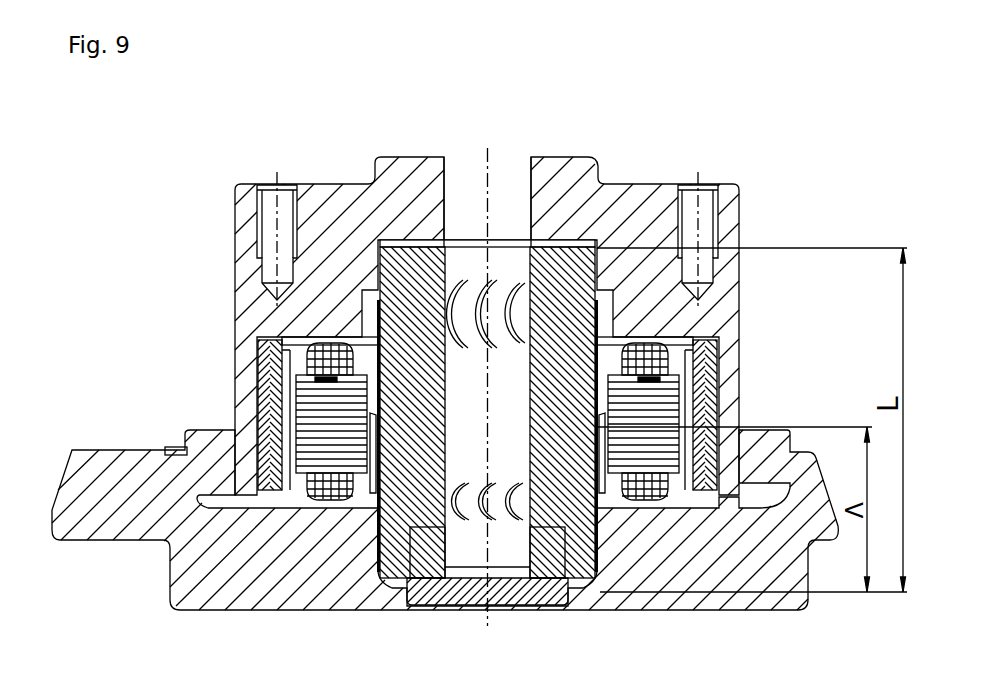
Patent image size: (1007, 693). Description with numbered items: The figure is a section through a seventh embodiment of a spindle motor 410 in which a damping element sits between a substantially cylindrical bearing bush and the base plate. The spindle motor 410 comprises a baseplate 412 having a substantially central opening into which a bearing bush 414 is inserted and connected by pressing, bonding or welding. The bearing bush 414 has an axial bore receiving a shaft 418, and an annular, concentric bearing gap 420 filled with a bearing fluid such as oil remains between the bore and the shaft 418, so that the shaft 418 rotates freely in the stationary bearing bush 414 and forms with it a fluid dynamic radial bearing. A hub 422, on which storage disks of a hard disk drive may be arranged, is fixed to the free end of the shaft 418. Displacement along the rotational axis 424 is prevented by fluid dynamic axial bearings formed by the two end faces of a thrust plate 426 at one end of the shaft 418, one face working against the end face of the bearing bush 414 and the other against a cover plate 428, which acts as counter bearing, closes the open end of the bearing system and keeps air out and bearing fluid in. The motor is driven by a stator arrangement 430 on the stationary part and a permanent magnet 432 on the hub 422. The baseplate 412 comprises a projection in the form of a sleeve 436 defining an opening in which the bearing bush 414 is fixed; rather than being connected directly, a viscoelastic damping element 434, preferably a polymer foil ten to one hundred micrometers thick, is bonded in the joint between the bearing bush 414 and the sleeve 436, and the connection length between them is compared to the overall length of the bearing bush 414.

The spindle motor 410 is at (445, 383).
The baseplate 412 is at (112, 517).
The bearing bush 414 is at (386, 243).
The shaft 418 is at (508, 198).
The bearing gap 420 is at (536, 395).
The hub 422 is at (650, 223).
The rotational axis 424 is at (490, 205).
The thrust plate 426 is at (430, 548).
The cover plate 428 is at (517, 585).
The stator arrangement 430 is at (262, 348).
The permanent magnet 432 is at (322, 405).
The damping element 434 is at (377, 487).
The sleeve 436 is at (598, 470).